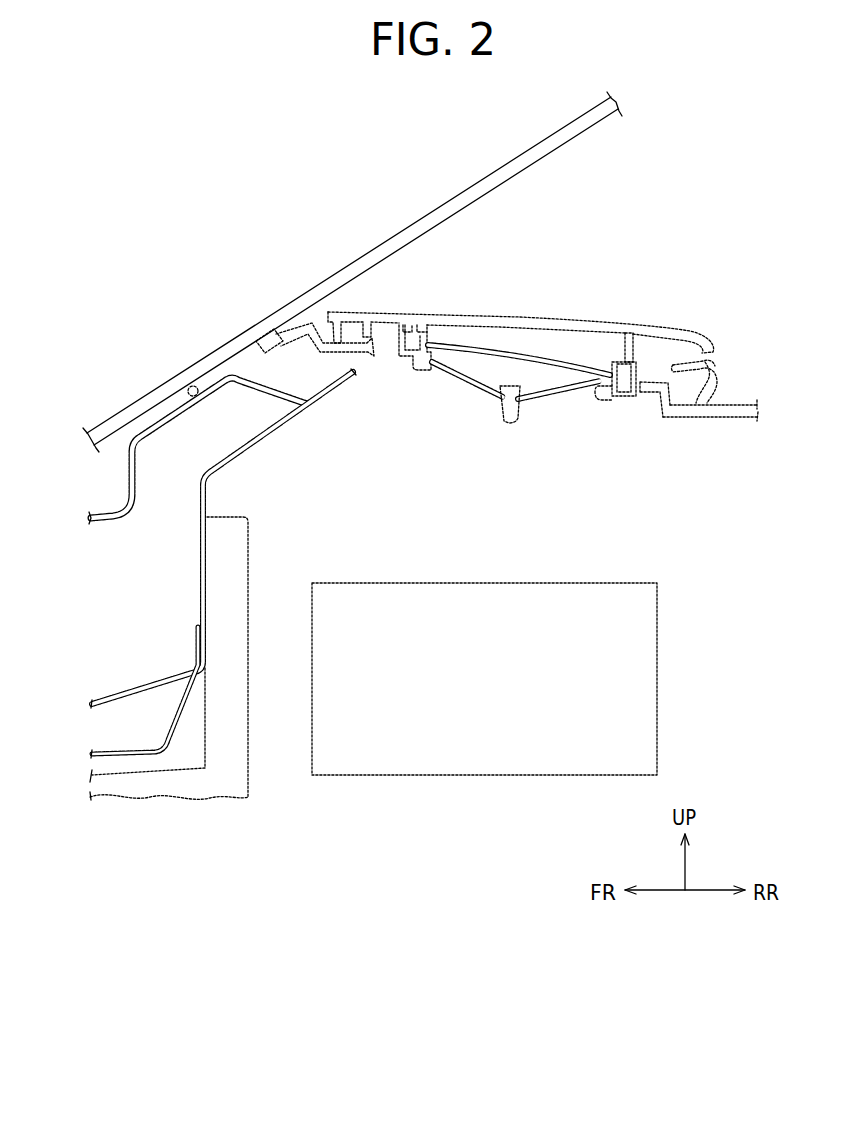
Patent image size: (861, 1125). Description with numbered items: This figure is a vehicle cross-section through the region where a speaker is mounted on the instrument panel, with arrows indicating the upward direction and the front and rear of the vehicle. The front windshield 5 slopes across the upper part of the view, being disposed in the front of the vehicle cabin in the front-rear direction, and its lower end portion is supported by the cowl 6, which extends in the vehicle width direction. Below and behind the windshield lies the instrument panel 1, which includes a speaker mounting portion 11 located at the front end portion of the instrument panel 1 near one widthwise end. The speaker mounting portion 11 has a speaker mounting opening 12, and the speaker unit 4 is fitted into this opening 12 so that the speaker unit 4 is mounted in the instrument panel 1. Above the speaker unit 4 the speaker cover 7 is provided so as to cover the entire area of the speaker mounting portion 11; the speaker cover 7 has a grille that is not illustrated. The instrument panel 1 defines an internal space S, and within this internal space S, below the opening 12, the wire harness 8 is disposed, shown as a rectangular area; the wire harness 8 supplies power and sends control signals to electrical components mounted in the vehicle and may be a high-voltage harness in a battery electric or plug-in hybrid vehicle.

The instrument panel 1 is at (737, 400).
The speaker unit 4 is at (557, 401).
The front windshield 5 is at (466, 190).
The cowl 6 is at (153, 420).
The speaker cover 7 is at (553, 317).
The wire harness 8 is at (534, 582).
The speaker mounting portion 11 is at (657, 380).
The speaker mounting opening 12 is at (622, 401).
The internal space S is at (457, 432).